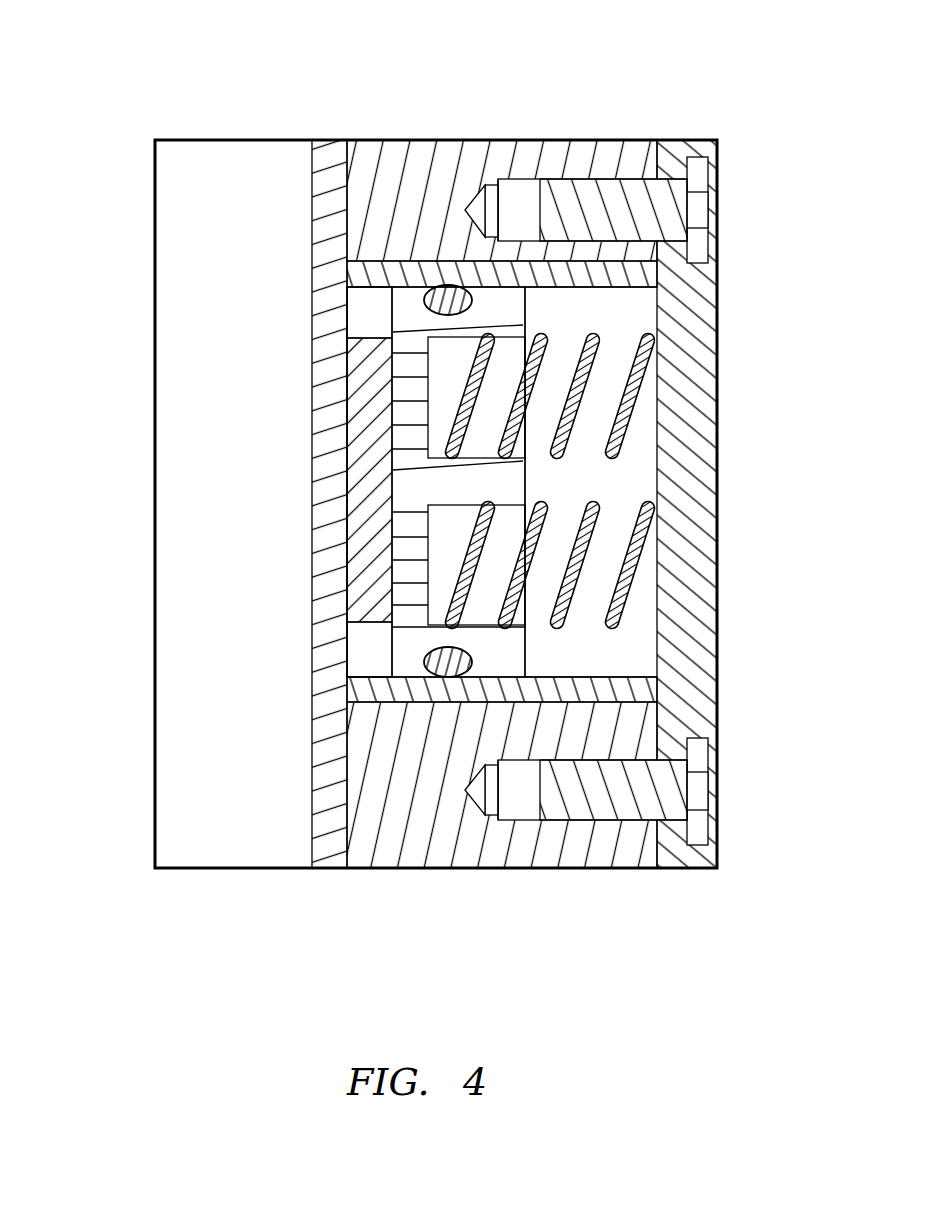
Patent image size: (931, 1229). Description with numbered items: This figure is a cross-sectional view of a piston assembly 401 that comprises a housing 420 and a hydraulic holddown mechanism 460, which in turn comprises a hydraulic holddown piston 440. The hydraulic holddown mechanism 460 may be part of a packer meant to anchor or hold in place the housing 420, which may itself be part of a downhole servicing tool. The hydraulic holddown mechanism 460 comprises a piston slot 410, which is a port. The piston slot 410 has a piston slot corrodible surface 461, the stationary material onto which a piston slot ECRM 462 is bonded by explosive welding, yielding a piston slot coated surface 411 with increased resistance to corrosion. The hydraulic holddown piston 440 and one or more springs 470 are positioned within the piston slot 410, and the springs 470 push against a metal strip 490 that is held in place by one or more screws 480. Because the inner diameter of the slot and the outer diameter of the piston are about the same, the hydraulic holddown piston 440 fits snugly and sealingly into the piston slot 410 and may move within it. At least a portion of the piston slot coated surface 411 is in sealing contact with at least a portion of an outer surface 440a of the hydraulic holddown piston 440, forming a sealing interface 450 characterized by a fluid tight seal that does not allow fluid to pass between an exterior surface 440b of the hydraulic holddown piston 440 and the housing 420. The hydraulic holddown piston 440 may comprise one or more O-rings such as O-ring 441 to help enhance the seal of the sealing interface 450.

The piston assembly 401 is at (58, 37).
The piston slot 410 is at (640, 260).
The piston slot coated surface 411 is at (393, 311).
The housing 420 is at (326, 162).
The hydraulic holddown piston 440 is at (403, 297).
The outer surface of the hydraulic holddown piston 440a is at (575, 178).
The exterior surface of the hydraulic holddown piston 440b is at (393, 491).
The O-ring 441 is at (458, 287).
The sealing interface 450 is at (500, 287).
The hydraulic holddown mechanism 460 is at (524, 162).
The piston slot corrodible surface 461 is at (456, 289).
The piston slot ECRM 462 is at (355, 262).
The spring 470 is at (637, 400).
The screw 480 is at (658, 193).
The metal strip 490 is at (687, 440).